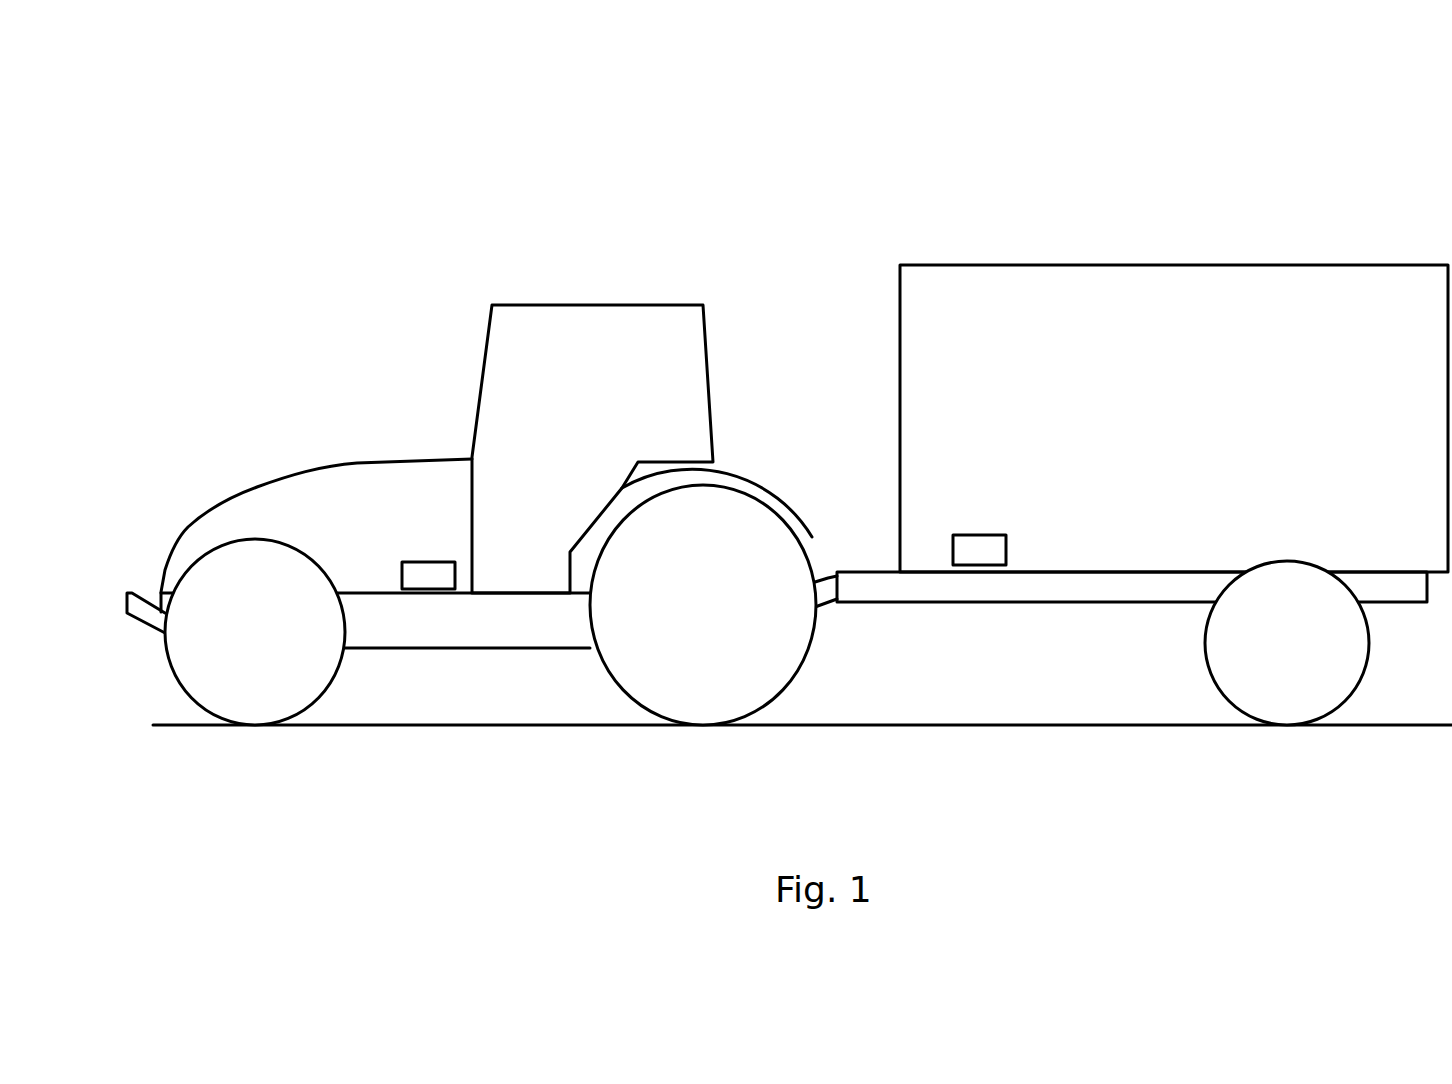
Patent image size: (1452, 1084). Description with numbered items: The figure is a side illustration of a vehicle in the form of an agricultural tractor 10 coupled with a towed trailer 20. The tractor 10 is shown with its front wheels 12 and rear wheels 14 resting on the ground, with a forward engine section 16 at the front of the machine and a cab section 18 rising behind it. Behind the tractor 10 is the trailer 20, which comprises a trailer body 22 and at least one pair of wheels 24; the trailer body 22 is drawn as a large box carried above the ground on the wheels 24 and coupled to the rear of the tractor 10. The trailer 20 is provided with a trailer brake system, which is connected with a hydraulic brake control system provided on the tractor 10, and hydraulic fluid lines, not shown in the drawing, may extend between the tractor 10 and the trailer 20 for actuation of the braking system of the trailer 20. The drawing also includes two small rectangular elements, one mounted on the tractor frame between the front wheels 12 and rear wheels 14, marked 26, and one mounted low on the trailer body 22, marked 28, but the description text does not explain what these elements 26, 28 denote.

The agricultural tractor 10 is at (190, 280).
The front wheels 12 is at (248, 710).
The rear wheels 14 is at (723, 693).
The forward engine section 16 is at (268, 492).
The cab section 18 is at (675, 370).
The towed trailer 20 is at (1051, 185).
The trailer body 22 is at (1108, 588).
The wheels 24 is at (1322, 693).
The sensor on vehicle 26 is at (430, 578).
The sensor on trailer 28 is at (981, 553).